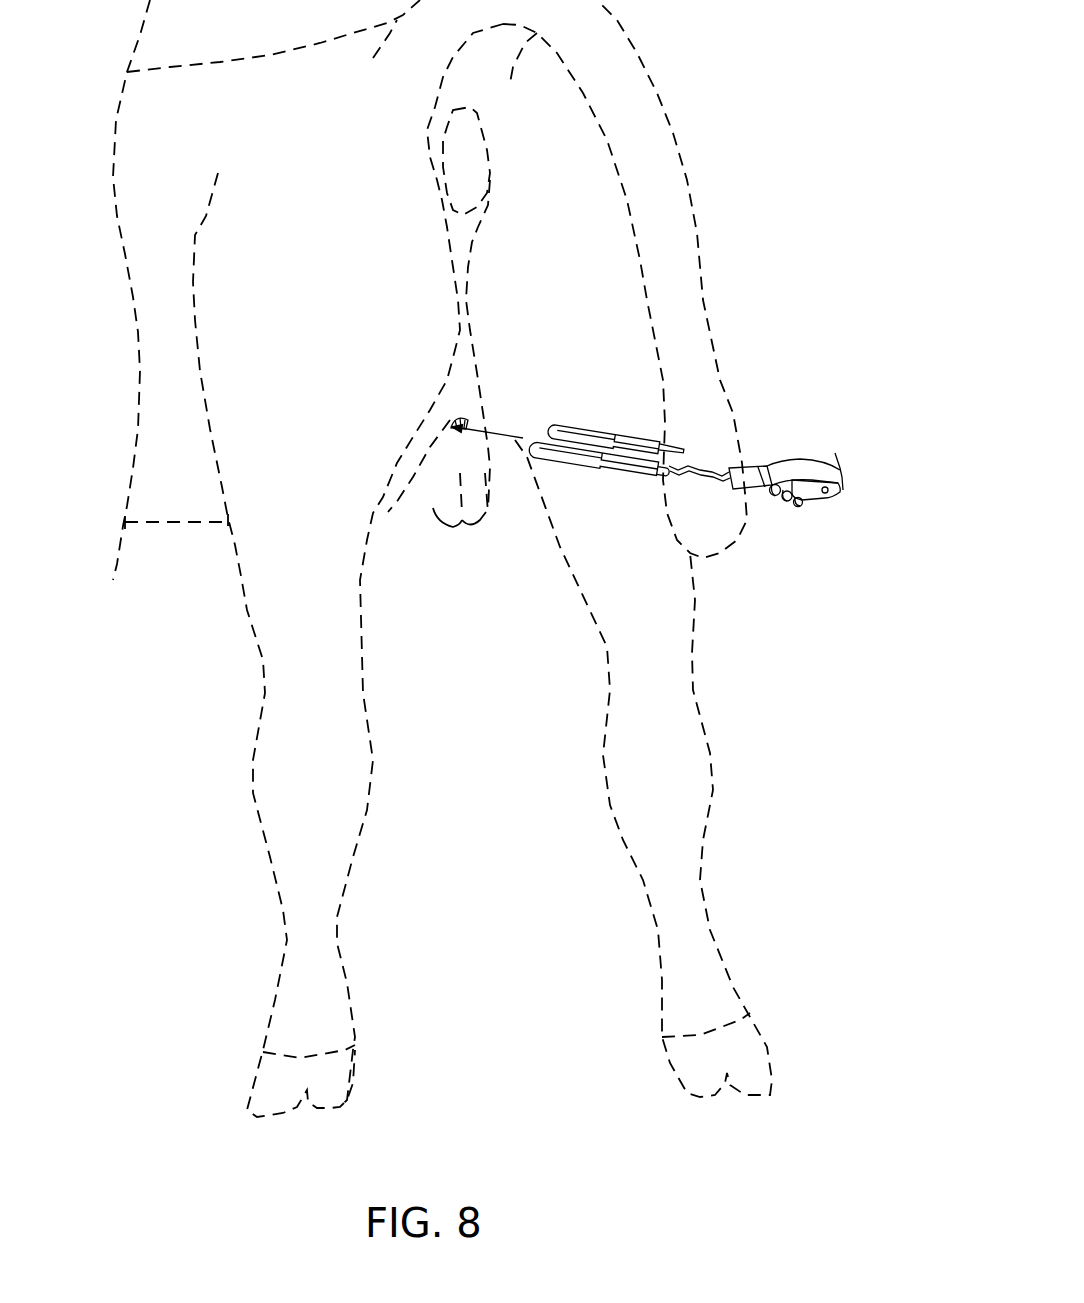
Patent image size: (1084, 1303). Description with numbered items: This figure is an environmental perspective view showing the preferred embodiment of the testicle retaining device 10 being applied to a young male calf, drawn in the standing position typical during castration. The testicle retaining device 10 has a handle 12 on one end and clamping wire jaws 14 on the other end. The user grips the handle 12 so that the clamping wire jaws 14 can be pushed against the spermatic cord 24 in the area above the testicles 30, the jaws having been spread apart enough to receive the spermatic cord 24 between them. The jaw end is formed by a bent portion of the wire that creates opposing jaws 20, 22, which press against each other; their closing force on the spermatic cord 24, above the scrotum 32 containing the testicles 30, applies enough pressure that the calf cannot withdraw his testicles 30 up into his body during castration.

The testicle retaining device 10 is at (692, 459).
The handle 12 is at (843, 490).
The clamping wire jaws 14 is at (593, 427).
The opposing jaw 20 is at (553, 427).
The opposing jaw 22 is at (530, 453).
The spermatic cord 24 is at (453, 418).
The testicles 30 is at (479, 522).
The scrotum 32 is at (440, 512).